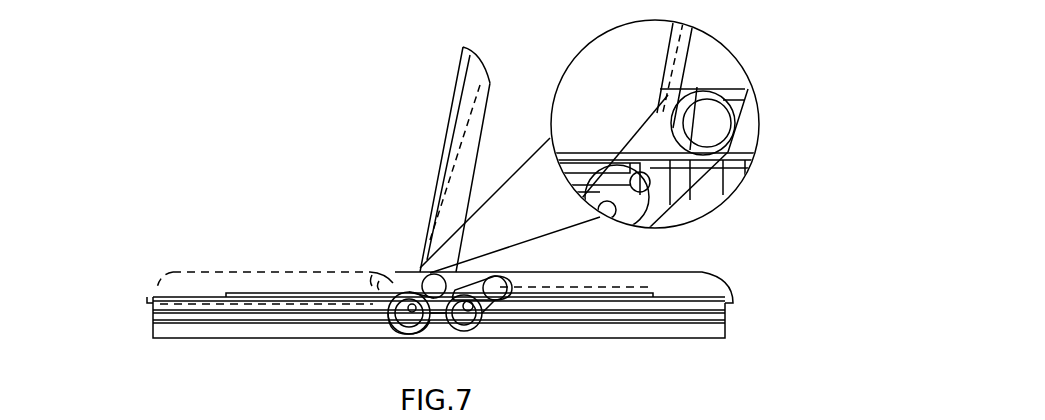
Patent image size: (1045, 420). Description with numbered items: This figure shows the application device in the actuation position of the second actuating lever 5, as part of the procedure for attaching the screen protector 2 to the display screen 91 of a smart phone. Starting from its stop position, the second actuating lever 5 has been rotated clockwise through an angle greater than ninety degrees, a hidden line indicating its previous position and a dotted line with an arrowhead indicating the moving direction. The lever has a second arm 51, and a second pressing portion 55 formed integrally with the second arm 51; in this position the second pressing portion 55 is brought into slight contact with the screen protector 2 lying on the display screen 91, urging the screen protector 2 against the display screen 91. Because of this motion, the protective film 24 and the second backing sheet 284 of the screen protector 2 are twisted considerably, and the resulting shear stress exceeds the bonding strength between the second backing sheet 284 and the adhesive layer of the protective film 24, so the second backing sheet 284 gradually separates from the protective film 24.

The screen protector 2 is at (752, 153).
The second actuating lever 5 is at (377, 111).
The protective film 24 is at (681, 93).
The second arm 51 is at (153, 283).
The second pressing portion 55 is at (737, 123).
The display screen 91 is at (583, 152).
The second backing sheet 284 is at (655, 112).